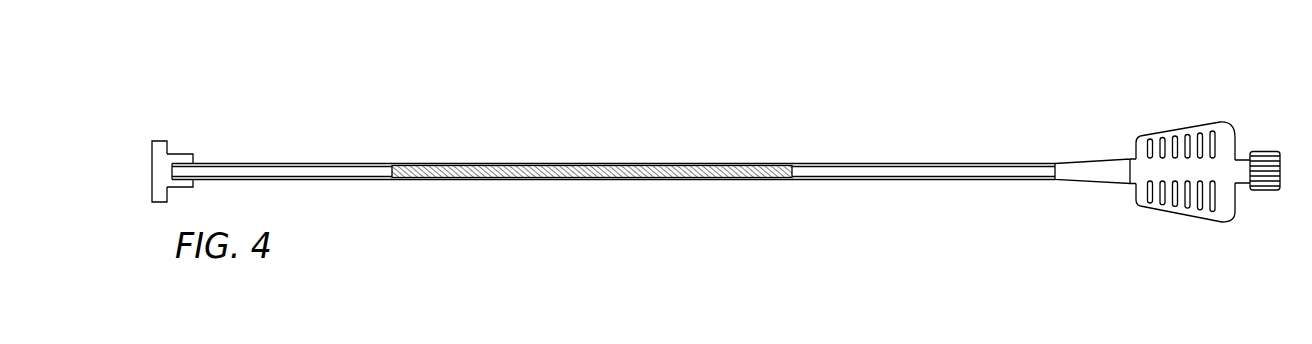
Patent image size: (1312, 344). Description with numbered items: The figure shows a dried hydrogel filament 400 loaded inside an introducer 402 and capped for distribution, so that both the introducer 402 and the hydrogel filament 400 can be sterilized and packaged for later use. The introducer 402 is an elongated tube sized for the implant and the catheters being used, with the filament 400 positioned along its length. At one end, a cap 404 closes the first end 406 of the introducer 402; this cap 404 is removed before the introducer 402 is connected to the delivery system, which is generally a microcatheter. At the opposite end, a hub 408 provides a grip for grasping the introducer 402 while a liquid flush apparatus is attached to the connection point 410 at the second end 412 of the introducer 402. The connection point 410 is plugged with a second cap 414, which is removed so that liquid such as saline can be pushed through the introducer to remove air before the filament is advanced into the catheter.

The hydrogel filament 400 is at (562, 165).
The introducer 402 is at (820, 114).
The cap 404 is at (160, 143).
The first end 406 is at (175, 157).
The hub 408 is at (1188, 138).
The connection point 410 is at (1247, 168).
The second end 412 is at (1235, 184).
The cap 414 is at (1268, 185).